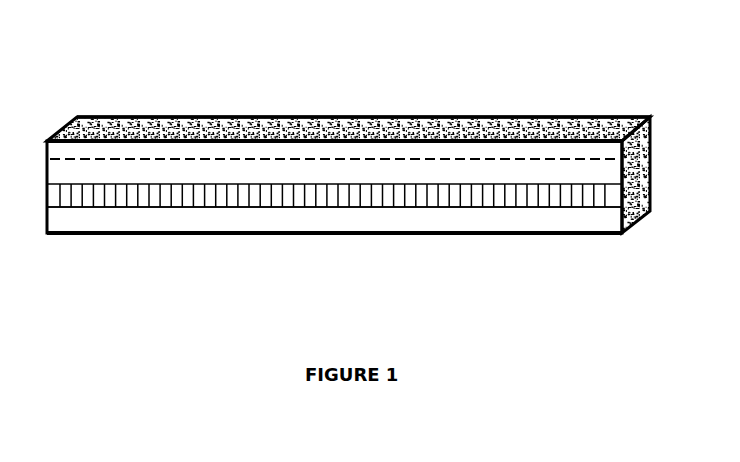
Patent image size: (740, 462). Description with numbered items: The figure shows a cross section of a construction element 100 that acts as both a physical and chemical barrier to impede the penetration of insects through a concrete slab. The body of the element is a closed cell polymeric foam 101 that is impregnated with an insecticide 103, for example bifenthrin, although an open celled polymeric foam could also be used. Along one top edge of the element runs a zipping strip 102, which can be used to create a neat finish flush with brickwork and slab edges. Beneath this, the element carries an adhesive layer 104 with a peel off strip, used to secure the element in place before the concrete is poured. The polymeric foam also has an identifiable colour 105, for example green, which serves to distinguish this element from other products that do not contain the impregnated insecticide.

The construction element 100 is at (342, 163).
The closed cell polymeric foam 101 is at (83, 217).
The zipping strip 102 is at (579, 160).
The insecticide 103 is at (267, 118).
The adhesive layer 104 is at (237, 197).
The identifiable colour 105 is at (355, 212).